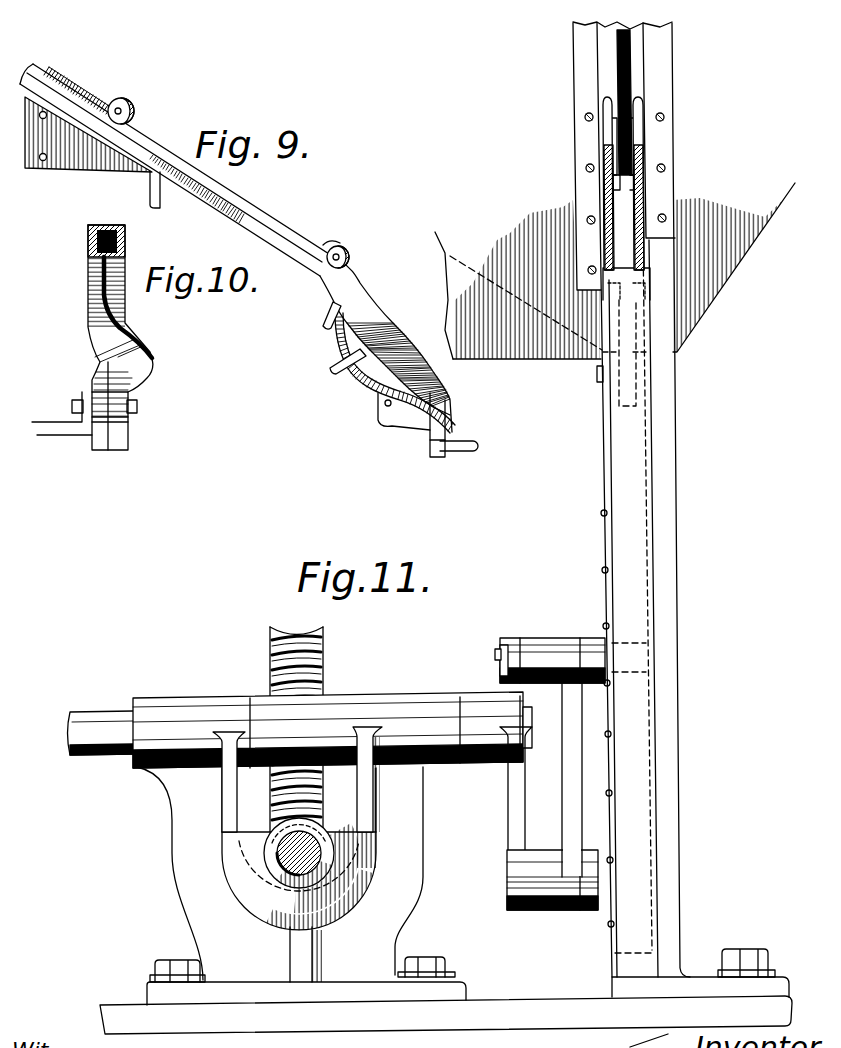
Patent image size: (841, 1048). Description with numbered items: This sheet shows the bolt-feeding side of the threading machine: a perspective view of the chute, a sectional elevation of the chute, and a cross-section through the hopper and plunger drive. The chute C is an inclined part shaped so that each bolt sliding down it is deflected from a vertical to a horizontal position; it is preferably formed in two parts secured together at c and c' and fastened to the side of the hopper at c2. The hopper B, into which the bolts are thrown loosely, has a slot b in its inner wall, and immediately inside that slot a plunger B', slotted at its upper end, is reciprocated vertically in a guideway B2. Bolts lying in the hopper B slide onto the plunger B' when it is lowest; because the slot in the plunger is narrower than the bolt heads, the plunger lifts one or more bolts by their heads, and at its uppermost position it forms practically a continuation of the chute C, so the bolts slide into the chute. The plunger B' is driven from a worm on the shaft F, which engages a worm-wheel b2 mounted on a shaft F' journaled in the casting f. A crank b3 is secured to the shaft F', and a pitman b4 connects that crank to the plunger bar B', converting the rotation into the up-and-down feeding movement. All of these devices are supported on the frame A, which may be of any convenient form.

In FIG. 9, the chute securing point c is at (249, 260).
In FIG. 10, the chute securing point c is at (126, 308).
In FIG. 9, the chute securing point c' is at (132, 98).
In FIG. 10, the chute securing point c' is at (84, 412).
In FIG. 9, the hopper attachment point c2 is at (34, 163).
In FIG. 11, the hopper attachment point c2 is at (648, 143).
In FIG. 11, the slot b is at (632, 82).
In FIG. 11, the chute C is at (603, 175).
In FIG. 11, the hopper B is at (615, 509).
In FIG. 11, the plunger B' is at (684, 424).
In FIG. 11, the guideway B2 is at (652, 460).
In FIG. 11, the worm-wheel b2 is at (323, 672).
In FIG. 11, the crank b3 is at (513, 790).
In FIG. 11, the pitman b4 is at (572, 773).
In FIG. 11, the shaft F is at (275, 855).
In FIG. 11, the shaft F' is at (300, 742).
In FIG. 11, the casting f is at (180, 783).
In FIG. 11, the frame A is at (542, 1010).